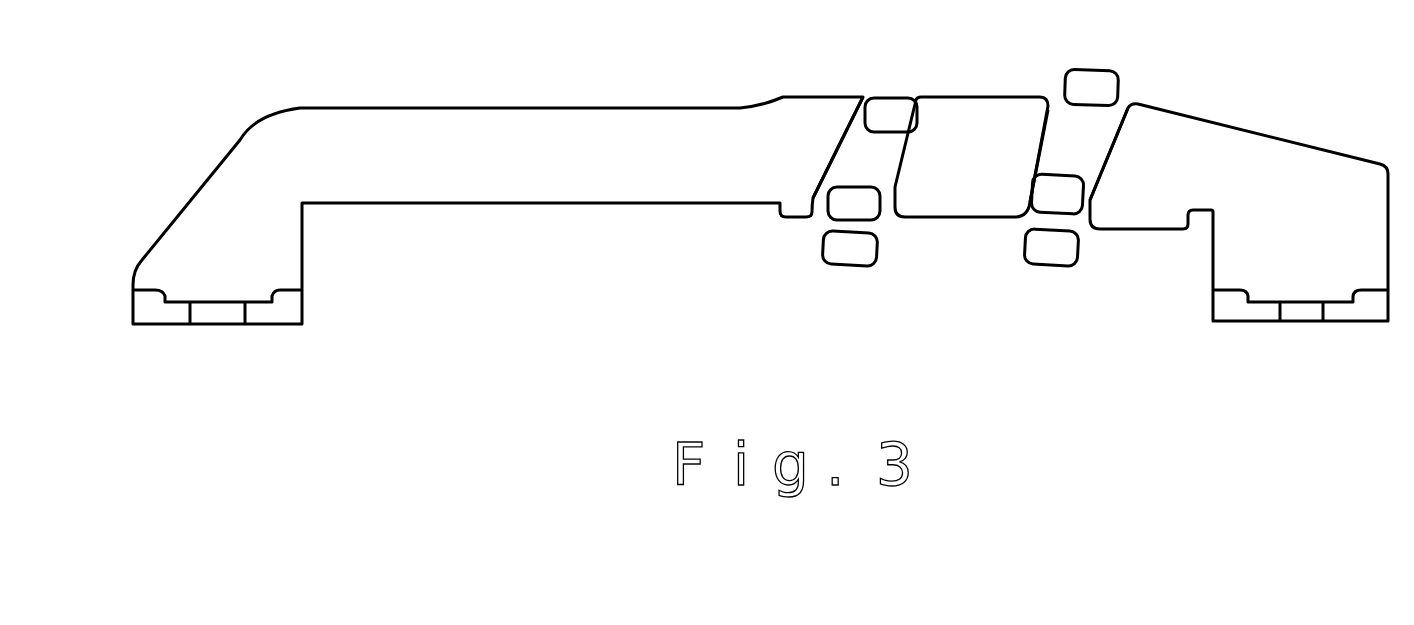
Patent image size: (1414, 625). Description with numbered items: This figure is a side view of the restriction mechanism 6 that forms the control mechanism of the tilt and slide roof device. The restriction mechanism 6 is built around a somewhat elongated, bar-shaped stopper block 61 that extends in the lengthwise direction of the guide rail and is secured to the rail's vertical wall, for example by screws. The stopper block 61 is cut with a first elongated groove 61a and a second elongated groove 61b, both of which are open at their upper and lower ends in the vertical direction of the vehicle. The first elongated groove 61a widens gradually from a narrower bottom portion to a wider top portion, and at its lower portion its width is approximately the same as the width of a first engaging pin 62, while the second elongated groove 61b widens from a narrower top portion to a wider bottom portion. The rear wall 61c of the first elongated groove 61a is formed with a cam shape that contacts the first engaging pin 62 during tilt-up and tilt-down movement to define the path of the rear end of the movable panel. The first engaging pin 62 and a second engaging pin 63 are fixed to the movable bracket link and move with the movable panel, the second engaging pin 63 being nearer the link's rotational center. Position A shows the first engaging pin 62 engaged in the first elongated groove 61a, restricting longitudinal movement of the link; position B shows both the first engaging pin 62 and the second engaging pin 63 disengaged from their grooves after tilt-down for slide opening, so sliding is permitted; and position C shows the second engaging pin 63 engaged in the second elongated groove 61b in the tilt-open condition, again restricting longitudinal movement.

The restriction mechanism 6 is at (977, 91).
The stopper block 61 is at (550, 100).
The first elongated groove 61a is at (1030, 165).
The second elongated groove 61b is at (843, 148).
The wall of the first elongated groove 61c is at (1092, 155).
The first engaging pin 62 is at (1088, 86).
The second engaging pin 63 is at (877, 207).
The position A is at (1055, 205).
The position B is at (846, 252).
The position C is at (884, 107).